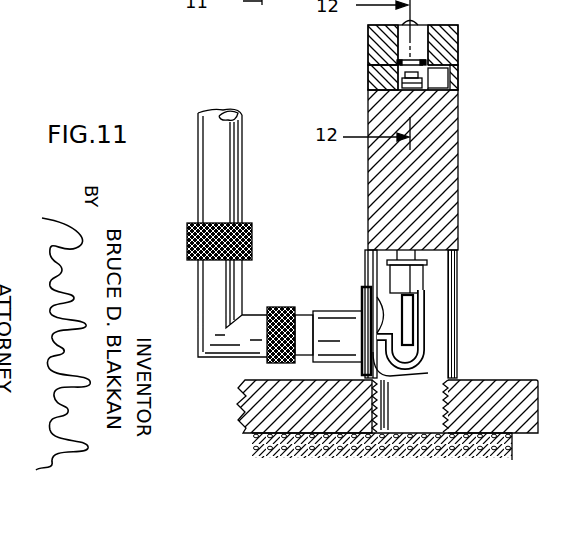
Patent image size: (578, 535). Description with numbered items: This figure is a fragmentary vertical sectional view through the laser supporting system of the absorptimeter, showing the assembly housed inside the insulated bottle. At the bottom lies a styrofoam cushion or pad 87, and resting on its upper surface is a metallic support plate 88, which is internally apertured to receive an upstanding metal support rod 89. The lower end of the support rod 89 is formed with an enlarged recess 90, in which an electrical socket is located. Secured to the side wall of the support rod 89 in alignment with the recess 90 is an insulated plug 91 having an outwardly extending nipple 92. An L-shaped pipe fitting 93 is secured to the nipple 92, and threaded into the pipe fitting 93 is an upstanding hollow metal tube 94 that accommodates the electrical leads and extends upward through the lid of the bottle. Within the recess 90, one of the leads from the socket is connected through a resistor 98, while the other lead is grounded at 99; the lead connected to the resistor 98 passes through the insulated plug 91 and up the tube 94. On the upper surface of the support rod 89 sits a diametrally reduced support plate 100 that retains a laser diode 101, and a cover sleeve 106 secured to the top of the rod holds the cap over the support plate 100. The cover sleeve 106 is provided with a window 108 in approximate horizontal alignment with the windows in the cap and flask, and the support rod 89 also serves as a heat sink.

The styrofoam cushion or pad 87 is at (513, 453).
The metallic support plate 88 is at (539, 411).
The metal support rod 89 is at (458, 180).
The recess 90 is at (441, 337).
The insulated plug 91 is at (371, 288).
The nipple 92 is at (322, 310).
The L-shaped pipe fitting 93 is at (237, 294).
The hollow metal tube 94 is at (241, 173).
The resistor 98 is at (411, 318).
The ground 99 is at (428, 374).
The support plate 100 is at (425, 90).
The laser diode 101 is at (399, 74).
The cover sleeve 106 is at (458, 33).
The window 108 is at (448, 76).